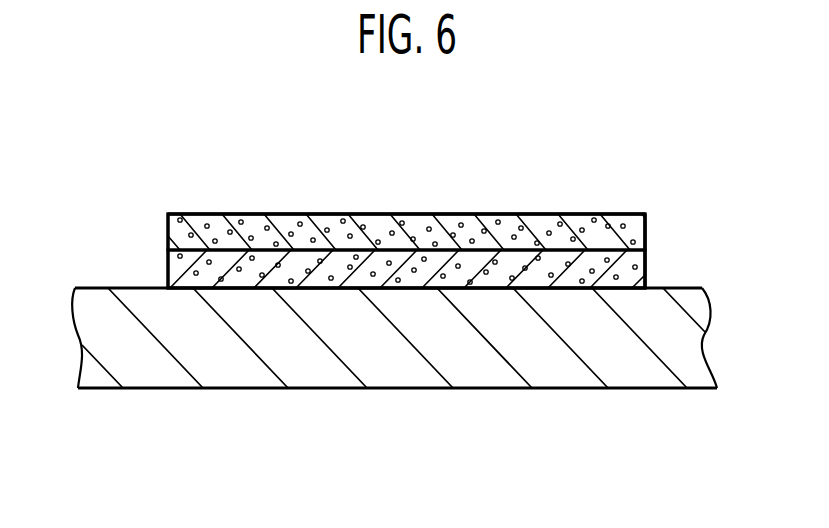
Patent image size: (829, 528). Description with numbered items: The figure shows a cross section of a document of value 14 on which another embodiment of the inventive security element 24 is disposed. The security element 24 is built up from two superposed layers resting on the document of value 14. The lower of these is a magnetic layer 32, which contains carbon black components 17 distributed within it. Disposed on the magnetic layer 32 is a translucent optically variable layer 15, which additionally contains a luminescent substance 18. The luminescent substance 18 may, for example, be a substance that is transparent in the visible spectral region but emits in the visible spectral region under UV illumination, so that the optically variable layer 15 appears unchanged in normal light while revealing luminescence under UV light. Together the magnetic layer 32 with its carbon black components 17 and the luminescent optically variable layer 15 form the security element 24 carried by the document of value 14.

The security element 24 is at (110, 145).
The translucent optically variable layer 15 is at (182, 213).
The luminescent substance 18 is at (608, 224).
The magnetic layer 32 is at (176, 268).
The carbon black components 17 is at (647, 272).
The document of value 14 is at (121, 388).